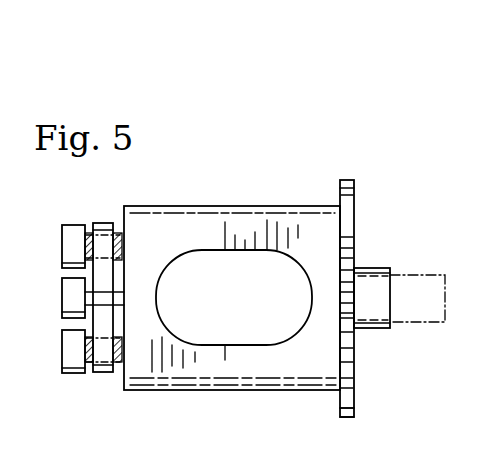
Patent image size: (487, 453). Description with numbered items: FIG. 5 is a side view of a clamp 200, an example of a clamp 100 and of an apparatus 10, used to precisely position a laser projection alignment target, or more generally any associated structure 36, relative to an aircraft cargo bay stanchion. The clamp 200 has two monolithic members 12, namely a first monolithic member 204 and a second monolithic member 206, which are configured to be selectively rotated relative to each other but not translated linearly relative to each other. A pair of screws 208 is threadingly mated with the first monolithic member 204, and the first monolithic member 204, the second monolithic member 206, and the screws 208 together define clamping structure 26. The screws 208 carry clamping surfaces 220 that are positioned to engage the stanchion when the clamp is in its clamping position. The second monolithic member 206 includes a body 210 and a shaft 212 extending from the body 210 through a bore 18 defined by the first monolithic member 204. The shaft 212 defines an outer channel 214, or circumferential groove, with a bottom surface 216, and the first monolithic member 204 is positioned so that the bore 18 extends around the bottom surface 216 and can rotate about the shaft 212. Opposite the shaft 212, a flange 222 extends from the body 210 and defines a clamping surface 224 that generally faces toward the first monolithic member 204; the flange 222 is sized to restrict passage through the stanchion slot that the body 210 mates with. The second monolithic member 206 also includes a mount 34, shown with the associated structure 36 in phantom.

The apparatus 10 is at (4, 92).
The clamp 100 is at (380, 75).
The clamp 200 is at (324, 118).
The monolithic members 12 is at (314, 145).
The clamping structure 26 is at (139, 184).
The second monolithic member 206 is at (229, 205).
The bottom surface 216 is at (122, 310).
The body 210 is at (260, 392).
The flange 222 is at (349, 176).
The clamping surface 224 is at (341, 408).
The mount 34 is at (369, 330).
The associated structure 36 is at (418, 271).
The first monolithic member 204 is at (114, 214).
The clamping surfaces 220 is at (122, 244).
The screws 208 is at (62, 231).
The shaft 212 is at (62, 302).
The outer channel 214 is at (117, 282).
The bore 18 is at (123, 297).